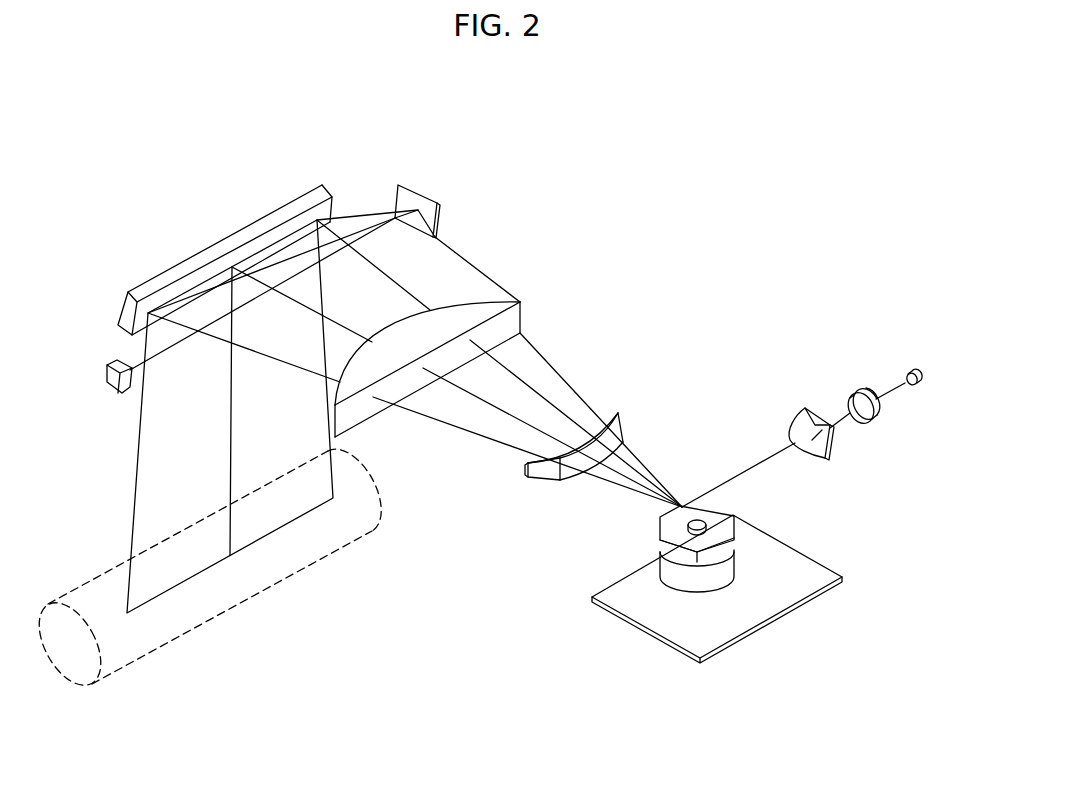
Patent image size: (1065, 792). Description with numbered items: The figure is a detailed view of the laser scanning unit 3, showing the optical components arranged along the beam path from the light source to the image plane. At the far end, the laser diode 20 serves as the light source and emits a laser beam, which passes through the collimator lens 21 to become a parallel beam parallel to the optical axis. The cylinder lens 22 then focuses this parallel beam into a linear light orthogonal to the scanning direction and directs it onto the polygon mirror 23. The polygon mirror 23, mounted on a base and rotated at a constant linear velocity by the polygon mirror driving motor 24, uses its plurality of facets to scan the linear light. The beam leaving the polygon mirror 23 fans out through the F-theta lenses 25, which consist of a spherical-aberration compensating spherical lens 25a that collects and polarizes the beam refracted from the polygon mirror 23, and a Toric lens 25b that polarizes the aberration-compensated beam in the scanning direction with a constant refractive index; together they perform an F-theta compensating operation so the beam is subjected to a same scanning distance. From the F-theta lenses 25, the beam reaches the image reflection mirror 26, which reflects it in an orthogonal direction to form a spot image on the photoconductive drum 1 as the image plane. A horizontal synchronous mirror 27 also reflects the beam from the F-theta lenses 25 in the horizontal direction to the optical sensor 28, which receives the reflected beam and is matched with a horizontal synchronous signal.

The photoconductive drum 1 is at (243, 584).
The laser scanning unit 3 is at (686, 186).
The laser diode 20 is at (908, 373).
The collimator lens 21 is at (858, 394).
The cylinder lens 22 is at (796, 422).
The polygon mirror 23 is at (722, 516).
The polygon mirror driving motor 24 is at (736, 558).
The F-theta lenses 25 is at (624, 396).
The spherical-aberration compensating spherical lens 25a is at (624, 416).
The Toric lens 25b is at (522, 302).
The image reflection mirror 26 is at (222, 248).
The horizontal synchronous mirror 27 is at (114, 366).
The optical sensor 28 is at (424, 194).